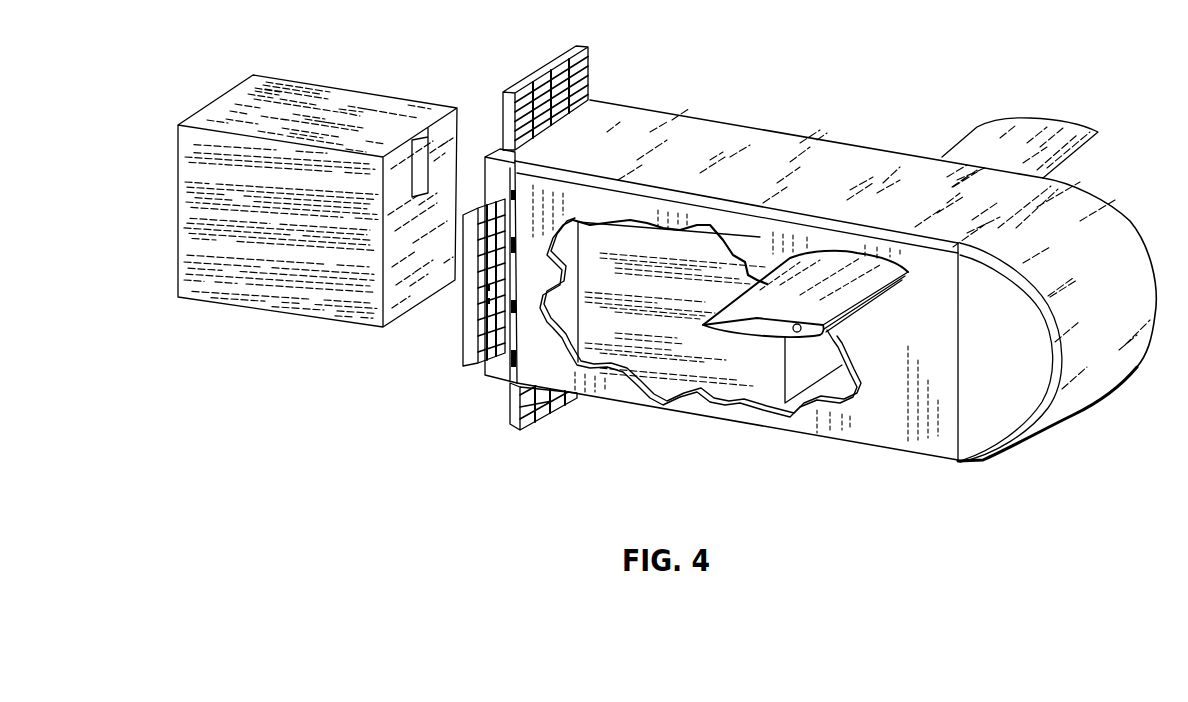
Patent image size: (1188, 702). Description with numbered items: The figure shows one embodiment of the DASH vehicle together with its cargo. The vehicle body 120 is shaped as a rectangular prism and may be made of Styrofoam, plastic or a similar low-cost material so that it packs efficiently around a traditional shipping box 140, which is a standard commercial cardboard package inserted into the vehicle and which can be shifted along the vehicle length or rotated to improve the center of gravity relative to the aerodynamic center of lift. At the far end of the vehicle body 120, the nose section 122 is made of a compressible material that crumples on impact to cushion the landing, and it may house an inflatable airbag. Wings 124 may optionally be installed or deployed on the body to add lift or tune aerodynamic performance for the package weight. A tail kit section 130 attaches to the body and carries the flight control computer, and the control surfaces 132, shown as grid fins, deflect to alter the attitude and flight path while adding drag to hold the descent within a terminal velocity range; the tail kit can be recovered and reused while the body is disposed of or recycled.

The vehicle body 120 is at (735, 153).
The nose section 122 is at (1003, 402).
The wings 124 is at (1023, 128).
The tail kit section 130 is at (502, 150).
The control surfaces 132 is at (468, 355).
The shipping box 140 is at (287, 225).